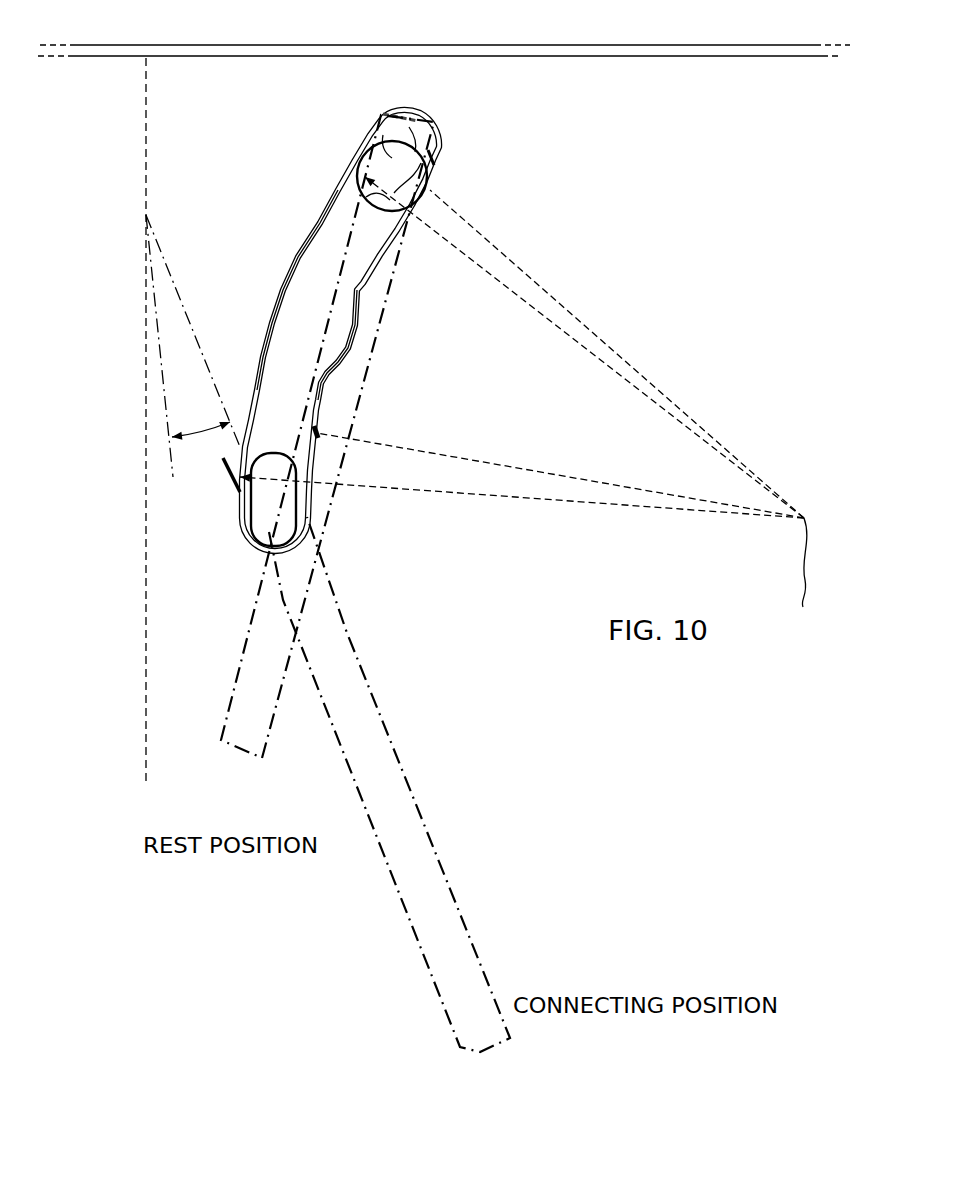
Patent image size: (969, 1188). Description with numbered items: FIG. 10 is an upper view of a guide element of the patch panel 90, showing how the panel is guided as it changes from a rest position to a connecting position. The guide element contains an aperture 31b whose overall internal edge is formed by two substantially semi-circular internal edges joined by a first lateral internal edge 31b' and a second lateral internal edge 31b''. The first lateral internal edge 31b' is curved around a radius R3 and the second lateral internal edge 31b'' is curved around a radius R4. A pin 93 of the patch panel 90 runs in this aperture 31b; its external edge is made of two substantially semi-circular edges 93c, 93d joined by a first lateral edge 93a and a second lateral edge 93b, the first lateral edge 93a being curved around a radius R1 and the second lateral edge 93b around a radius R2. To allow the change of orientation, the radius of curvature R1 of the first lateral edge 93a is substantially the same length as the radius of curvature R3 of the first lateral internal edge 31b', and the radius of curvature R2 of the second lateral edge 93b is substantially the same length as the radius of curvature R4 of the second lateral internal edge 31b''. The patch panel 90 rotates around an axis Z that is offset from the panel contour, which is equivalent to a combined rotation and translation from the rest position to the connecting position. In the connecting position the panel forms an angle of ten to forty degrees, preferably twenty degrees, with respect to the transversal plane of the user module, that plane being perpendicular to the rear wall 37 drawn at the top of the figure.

The rear wall 37 is at (548, 60).
The pin 93 is at (382, 176).
The first lateral edge 93a is at (397, 120).
The second lateral edge 93b is at (434, 147).
The semi-circular edge 93c is at (388, 206).
The semi-circular edge 93d is at (423, 160).
The aperture 31b is at (315, 330).
The first lateral internal edge 31b' is at (297, 290).
The second lateral internal edge 31b'' is at (375, 325).
The patch panel 90 is at (232, 688).
The radius of curvature R1 is at (584, 347).
The radius of curvature R2 is at (617, 354).
The radius of curvature R3 is at (522, 496).
The radius of curvature R4 is at (560, 473).
The axis Z is at (814, 577).